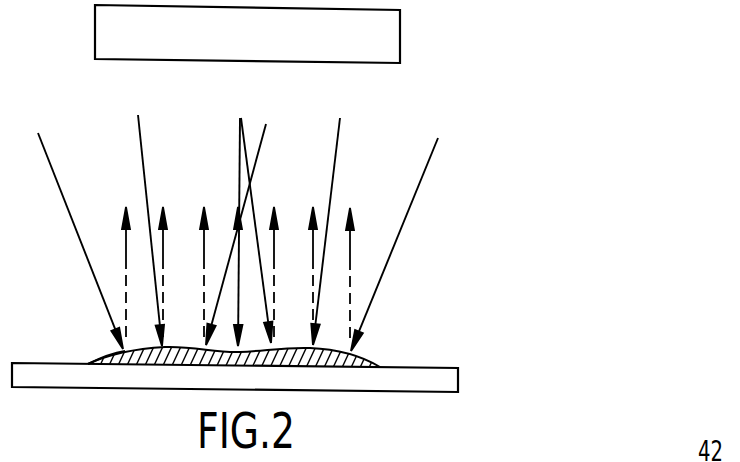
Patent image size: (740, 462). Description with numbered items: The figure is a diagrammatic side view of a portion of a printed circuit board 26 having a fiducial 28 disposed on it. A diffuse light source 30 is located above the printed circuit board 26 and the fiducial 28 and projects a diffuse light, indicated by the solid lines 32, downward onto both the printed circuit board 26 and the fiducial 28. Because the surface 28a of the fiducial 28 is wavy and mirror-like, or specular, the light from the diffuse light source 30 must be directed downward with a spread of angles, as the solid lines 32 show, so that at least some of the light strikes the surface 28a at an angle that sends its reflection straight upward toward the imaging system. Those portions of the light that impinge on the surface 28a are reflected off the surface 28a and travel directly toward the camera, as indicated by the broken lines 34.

The diffuse light source 30 is at (400, 33).
The diffuse light 32 is at (42, 140).
The reflected light 34 is at (350, 252).
The fiducial 28 is at (368, 360).
The surface of the fiducial 28a is at (108, 356).
The printed circuit board 26 is at (459, 371).